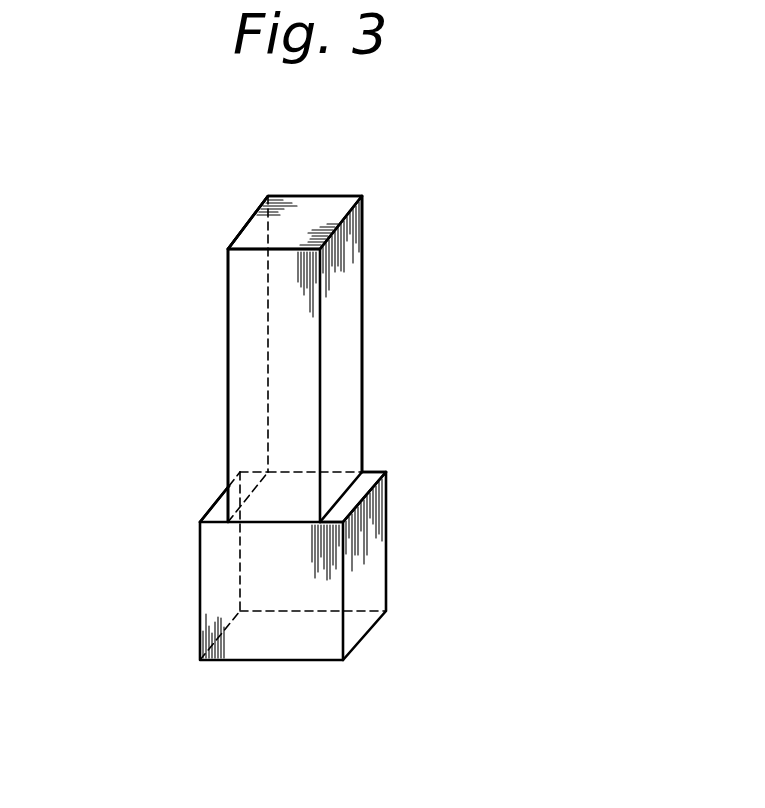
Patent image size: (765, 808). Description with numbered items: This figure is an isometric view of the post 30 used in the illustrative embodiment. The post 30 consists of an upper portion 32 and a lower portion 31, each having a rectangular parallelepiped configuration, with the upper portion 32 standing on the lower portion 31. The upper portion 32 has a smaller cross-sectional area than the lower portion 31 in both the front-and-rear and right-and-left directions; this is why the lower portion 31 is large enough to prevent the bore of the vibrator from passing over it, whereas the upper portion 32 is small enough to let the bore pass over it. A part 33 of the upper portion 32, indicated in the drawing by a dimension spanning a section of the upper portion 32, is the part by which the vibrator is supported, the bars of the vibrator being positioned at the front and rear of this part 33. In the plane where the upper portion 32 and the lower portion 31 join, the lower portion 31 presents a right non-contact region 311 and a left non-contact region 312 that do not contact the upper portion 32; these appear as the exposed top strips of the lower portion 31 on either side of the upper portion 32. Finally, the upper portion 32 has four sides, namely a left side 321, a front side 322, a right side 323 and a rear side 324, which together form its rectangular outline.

The post 30 is at (144, 176).
The lower portion 31 is at (386, 472).
The upper portion 32 is at (362, 197).
The part of the upper portion 33 is at (362, 387).
The right non-contact region 311 is at (383, 476).
The left non-contact region 312 is at (218, 512).
The left side 321 is at (352, 253).
The front side 322 is at (265, 327).
The right side 323 is at (252, 263).
The rear side 324 is at (308, 217).